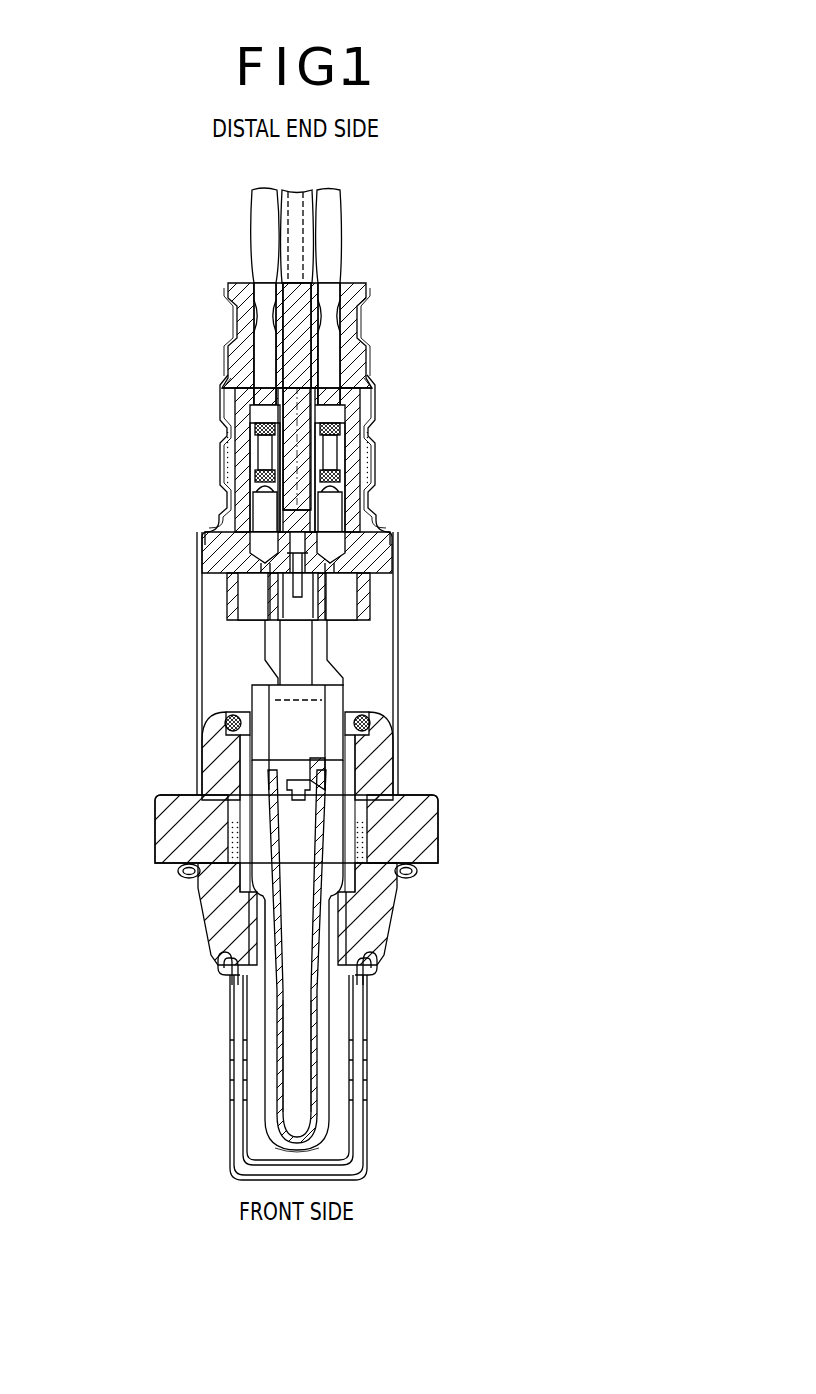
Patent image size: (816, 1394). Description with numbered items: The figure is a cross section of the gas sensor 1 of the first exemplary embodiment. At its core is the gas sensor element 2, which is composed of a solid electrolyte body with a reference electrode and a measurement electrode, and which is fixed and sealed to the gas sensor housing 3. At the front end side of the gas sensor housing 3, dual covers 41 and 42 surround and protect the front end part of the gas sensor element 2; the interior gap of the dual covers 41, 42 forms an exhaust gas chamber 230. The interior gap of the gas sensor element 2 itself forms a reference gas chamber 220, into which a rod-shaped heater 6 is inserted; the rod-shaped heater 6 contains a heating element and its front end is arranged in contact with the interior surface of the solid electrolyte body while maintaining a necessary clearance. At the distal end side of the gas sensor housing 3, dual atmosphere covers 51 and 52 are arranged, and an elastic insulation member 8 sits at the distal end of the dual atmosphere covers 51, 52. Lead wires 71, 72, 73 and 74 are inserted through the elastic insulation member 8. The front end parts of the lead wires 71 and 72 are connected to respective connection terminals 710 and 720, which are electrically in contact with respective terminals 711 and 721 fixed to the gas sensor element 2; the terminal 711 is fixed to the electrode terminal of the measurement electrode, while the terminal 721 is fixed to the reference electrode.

The gas sensor 1 is at (136, 833).
The gas sensor element 2 is at (332, 1029).
The gas sensor housing 3 is at (430, 838).
The rod-shaped heater 6 is at (298, 1015).
The elastic insulation member 8 is at (342, 331).
The cover 41 is at (353, 1106).
The cover 42 is at (366, 1158).
The atmosphere cover 51 is at (396, 699).
The atmosphere cover 52 is at (374, 470).
The lead wire 71 is at (330, 243).
The lead wire 72 is at (266, 232).
The lead wire 73 is at (292, 188).
The lead wire 74 is at (297, 396).
The reference gas chamber 220 is at (262, 898).
The exhaust gas chamber 230 is at (266, 1148).
The connection terminal 710 is at (338, 505).
The terminal 711 is at (334, 668).
The connection terminal 720 is at (262, 506).
The terminal 721 is at (264, 660).